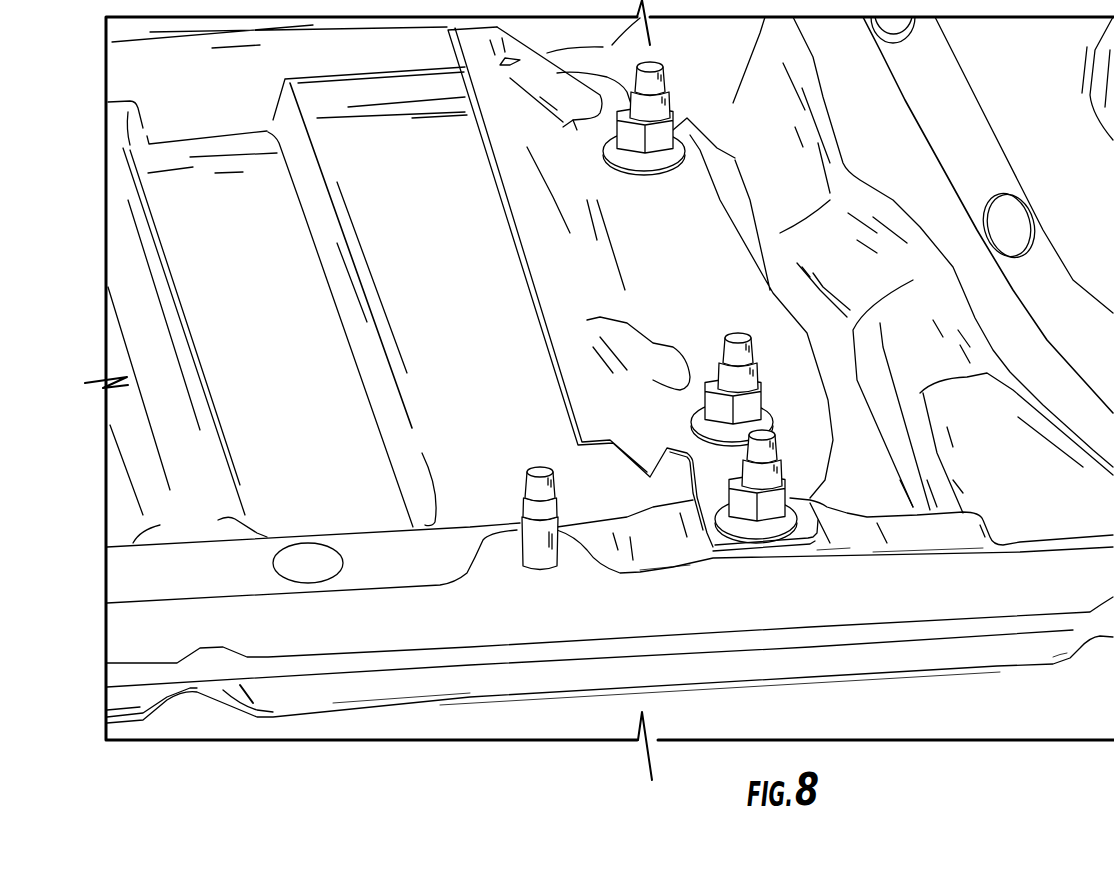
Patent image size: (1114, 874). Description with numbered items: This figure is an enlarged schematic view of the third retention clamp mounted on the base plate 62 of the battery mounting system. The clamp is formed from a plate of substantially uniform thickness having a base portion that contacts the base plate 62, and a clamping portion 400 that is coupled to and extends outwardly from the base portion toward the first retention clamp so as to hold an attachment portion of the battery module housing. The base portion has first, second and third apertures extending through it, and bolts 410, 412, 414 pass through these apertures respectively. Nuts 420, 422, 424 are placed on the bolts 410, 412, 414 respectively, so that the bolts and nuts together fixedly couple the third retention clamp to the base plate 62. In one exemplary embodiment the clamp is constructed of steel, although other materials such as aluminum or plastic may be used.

The base plate 62 is at (300, 336).
The clamping portion 400 is at (540, 263).
The bolt 410 is at (775, 455).
The bolt 412 is at (750, 367).
The bolt 414 is at (662, 92).
The nut 420 is at (773, 510).
The nut 422 is at (760, 398).
The nut 424 is at (662, 140).